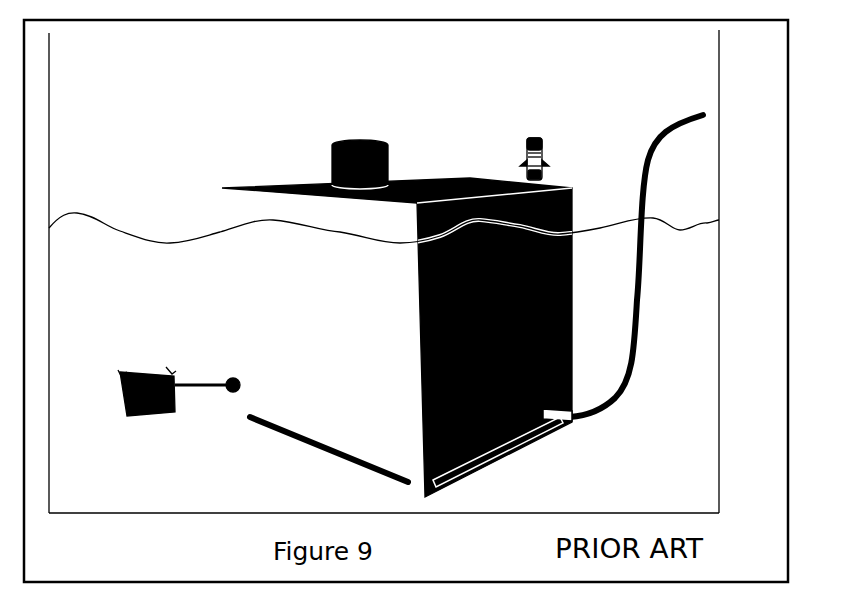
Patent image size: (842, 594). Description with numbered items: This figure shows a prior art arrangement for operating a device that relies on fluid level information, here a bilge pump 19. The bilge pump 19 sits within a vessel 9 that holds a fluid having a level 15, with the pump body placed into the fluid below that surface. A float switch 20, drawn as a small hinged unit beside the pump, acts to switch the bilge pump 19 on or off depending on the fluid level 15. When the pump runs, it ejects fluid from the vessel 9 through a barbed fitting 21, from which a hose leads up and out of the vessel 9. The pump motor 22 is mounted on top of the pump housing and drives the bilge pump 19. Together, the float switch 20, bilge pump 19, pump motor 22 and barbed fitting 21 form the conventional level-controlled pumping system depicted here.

The vessel 9 is at (720, 302).
The fluid level 15 is at (107, 218).
The bilge pump 19 is at (312, 348).
The float switch 20 is at (142, 372).
The barbed fitting 21 is at (543, 135).
The pump motor 22 is at (368, 135).